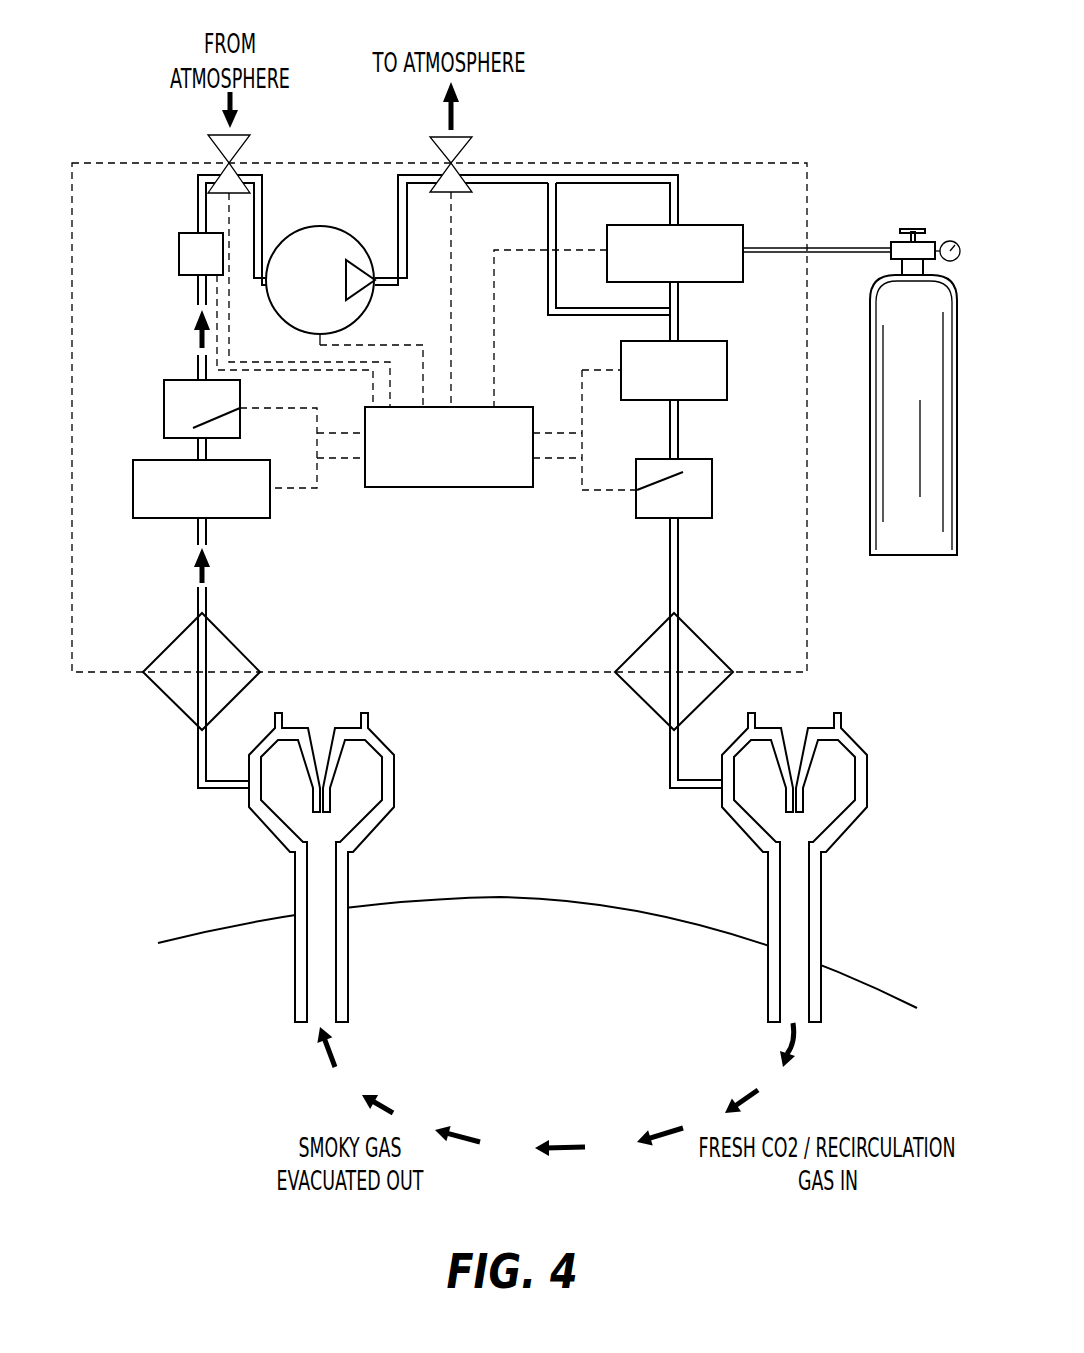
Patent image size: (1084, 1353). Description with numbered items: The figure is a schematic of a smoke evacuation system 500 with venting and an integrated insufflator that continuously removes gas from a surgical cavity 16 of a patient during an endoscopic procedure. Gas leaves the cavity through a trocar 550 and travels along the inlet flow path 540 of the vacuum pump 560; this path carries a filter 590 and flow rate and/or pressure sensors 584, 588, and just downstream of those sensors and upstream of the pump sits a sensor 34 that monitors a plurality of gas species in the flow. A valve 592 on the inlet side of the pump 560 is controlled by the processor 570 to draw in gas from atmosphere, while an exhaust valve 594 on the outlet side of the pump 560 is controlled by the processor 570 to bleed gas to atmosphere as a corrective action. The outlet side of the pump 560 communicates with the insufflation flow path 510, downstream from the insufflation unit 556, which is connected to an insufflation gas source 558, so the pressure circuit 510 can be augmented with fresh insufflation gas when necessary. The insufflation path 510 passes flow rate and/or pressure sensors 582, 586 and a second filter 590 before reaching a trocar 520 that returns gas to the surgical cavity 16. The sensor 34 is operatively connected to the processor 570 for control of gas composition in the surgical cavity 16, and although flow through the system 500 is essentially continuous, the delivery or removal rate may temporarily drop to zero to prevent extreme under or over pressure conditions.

The smoke evacuation system 500 is at (143, 48).
The sensor 34 is at (179, 253).
The valve 592 is at (247, 145).
The exhaust valve 594 is at (465, 147).
The vacuum pump 560 is at (372, 300).
The insufflation unit 556 is at (657, 266).
The insufflation gas source 558 is at (896, 381).
The flow rate and/or pressure sensor 582 is at (656, 383).
The processor 570 is at (431, 458).
The flow rate and/or pressure sensor 584 is at (183, 502).
The flow rate and/or pressure sensor 588 is at (164, 412).
The flow rate and/or pressure sensor 586 is at (712, 485).
The filter 590 is at (223, 630).
The inlet flow path 540 is at (185, 757).
The insufflation flow path 510 is at (635, 727).
The trocar 550 is at (302, 895).
The trocar 520 is at (818, 948).
The surgical cavity 16 is at (603, 938).